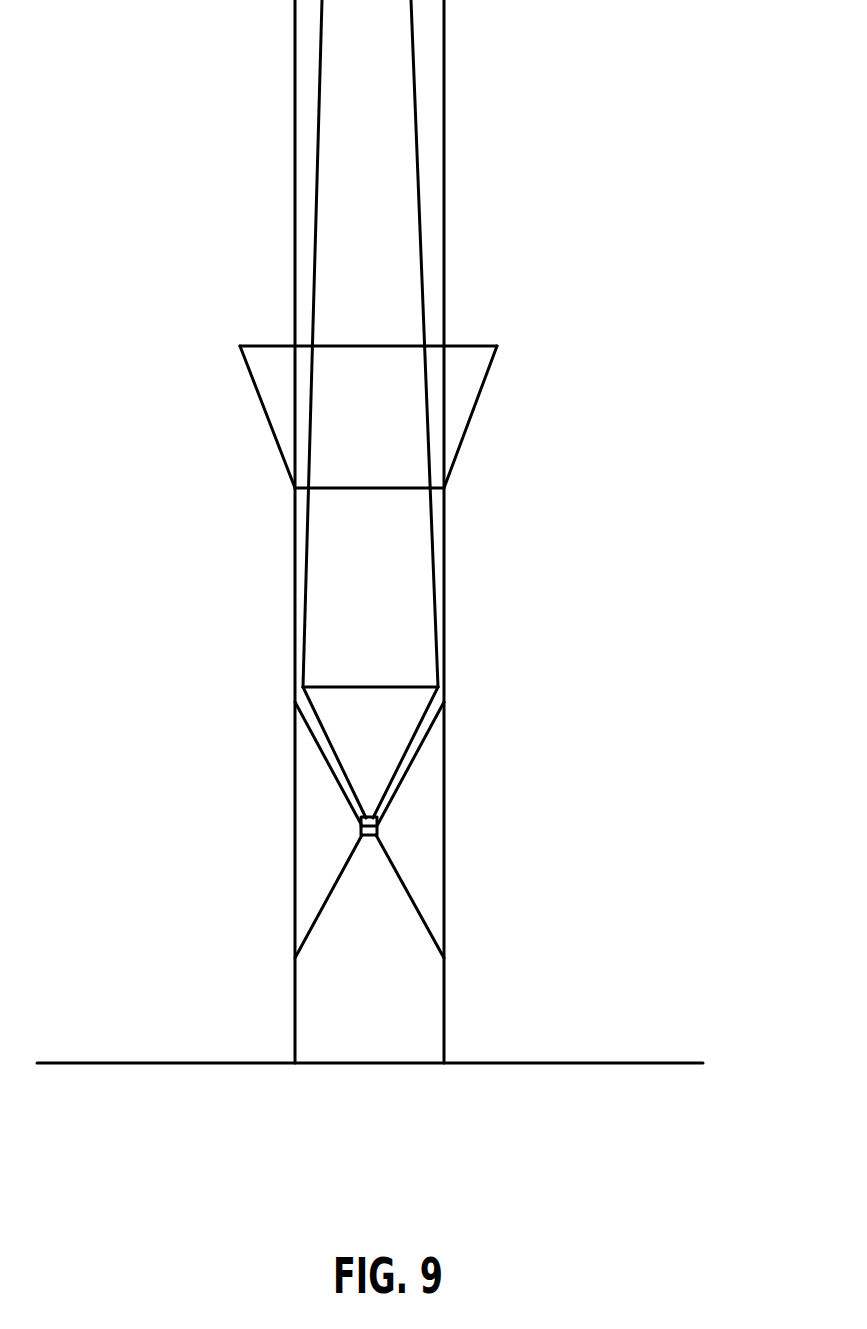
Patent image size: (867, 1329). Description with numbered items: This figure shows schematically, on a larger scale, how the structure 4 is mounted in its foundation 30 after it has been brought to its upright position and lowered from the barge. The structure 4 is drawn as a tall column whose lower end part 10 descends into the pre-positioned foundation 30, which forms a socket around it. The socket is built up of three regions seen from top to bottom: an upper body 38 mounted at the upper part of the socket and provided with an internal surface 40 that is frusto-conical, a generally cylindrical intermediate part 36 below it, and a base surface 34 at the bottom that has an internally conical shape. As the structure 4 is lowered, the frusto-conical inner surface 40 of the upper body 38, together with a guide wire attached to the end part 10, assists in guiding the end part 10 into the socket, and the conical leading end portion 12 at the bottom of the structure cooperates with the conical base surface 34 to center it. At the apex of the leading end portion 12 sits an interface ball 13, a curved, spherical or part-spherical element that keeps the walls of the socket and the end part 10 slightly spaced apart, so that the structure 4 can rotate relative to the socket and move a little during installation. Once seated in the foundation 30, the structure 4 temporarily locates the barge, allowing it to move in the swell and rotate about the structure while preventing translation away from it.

The structure 4 is at (430, 193).
The end part 10 is at (330, 148).
The conical leading end portion 12 is at (382, 743).
The interface ball 13 is at (378, 823).
The foundation 30 is at (447, 1024).
The base surface 34 is at (337, 790).
The intermediate part 36 is at (447, 643).
The upper body 38 is at (262, 405).
The internal surface 40 is at (470, 405).